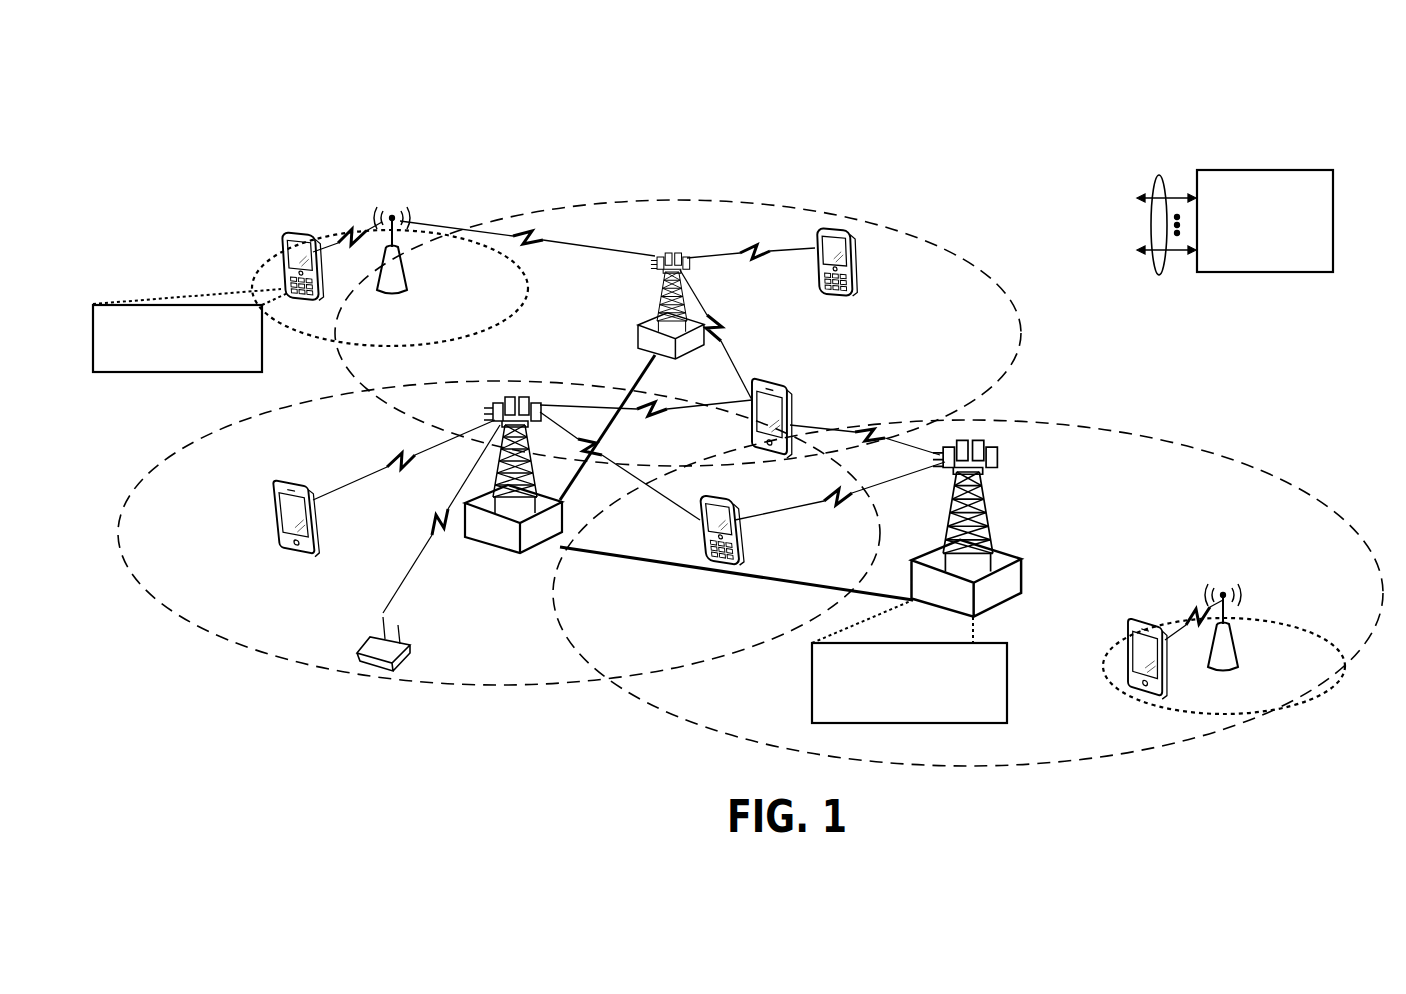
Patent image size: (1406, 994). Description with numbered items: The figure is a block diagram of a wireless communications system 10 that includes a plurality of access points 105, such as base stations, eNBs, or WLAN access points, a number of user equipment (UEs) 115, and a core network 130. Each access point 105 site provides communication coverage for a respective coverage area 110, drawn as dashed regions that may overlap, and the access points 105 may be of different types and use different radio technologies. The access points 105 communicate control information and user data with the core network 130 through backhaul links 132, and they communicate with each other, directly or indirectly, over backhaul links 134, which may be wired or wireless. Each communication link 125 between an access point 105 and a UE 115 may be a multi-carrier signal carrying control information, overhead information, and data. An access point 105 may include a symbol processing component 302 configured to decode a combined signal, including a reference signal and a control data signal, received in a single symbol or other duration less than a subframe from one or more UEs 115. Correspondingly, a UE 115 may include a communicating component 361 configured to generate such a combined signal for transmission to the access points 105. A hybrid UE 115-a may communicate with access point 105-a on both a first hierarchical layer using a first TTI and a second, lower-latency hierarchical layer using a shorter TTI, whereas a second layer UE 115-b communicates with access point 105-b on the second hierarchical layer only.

The wireless communications system 10 is at (1361, 73).
The access point 105 is at (404, 290).
The access point 105-a is at (495, 548).
The access point 105-b is at (642, 327).
The coverage area 110 is at (801, 191).
The user equipment 115 is at (287, 243).
The hybrid UE 115-a is at (275, 502).
The second layer UE 115-b is at (851, 276).
The communication link 125 is at (347, 232).
The core network 130 is at (1253, 170).
The backhaul links 132 is at (1159, 177).
The backhaul links 134 is at (637, 382).
The symbol processing component 302 is at (887, 643).
The communicating component 361 is at (150, 372).